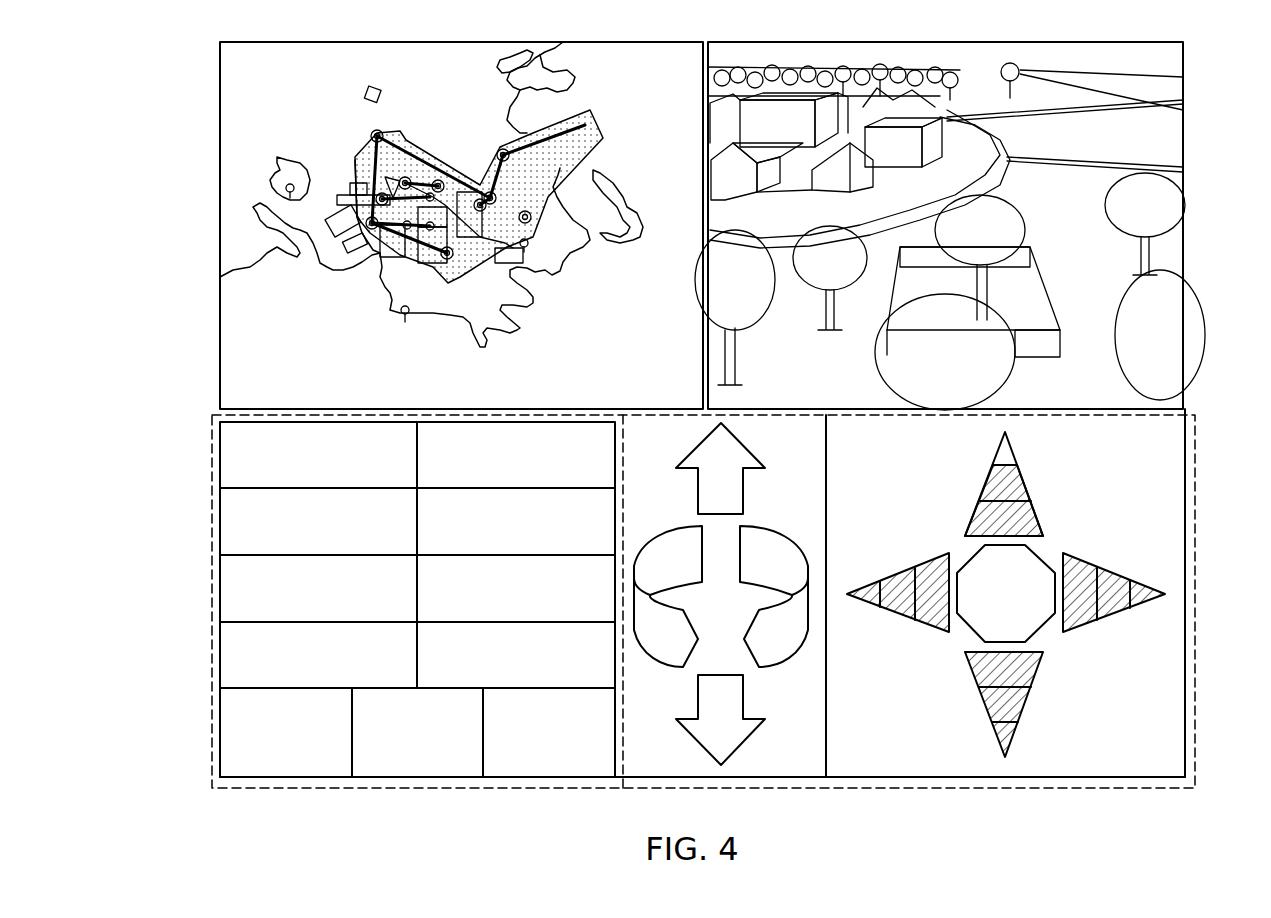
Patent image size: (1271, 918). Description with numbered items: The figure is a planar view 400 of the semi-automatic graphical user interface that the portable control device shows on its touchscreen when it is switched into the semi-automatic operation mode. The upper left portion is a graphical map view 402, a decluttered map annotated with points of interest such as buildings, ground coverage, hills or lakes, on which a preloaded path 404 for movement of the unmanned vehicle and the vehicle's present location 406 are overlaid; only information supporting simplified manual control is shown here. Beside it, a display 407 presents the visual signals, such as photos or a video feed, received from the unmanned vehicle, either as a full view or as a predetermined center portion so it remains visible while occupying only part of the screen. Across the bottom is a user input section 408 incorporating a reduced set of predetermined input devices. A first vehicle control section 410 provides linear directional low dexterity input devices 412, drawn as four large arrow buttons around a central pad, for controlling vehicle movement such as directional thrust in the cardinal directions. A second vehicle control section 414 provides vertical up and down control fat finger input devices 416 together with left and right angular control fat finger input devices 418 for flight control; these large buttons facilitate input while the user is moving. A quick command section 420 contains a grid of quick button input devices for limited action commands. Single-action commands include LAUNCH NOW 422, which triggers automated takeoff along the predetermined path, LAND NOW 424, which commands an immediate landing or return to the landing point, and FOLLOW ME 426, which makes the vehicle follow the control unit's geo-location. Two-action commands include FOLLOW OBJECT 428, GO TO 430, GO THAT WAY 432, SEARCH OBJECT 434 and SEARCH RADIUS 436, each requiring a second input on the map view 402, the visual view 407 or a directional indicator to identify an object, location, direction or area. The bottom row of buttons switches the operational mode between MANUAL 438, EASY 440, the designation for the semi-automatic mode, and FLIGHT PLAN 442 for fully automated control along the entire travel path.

The view 400 is at (145, 88).
The graphical map view 402 is at (468, 42).
The preloaded path 404 is at (415, 148).
The present location 406 is at (456, 276).
The display of visual signals 407 is at (966, 42).
The user input section 408 is at (1200, 522).
The first vehicle control section 410 is at (1166, 453).
The linear directional low dexterity input devices 412 is at (985, 483).
The second vehicle control section 414 is at (816, 453).
The vertical up and down control fat finger input devices 416 is at (692, 450).
The left and right angular control fat finger input devices 418 is at (673, 526).
The quick command section 420 is at (210, 522).
The LAUNCH NOW quick button input device 422 is at (340, 481).
The LAND NOW quick button input device 424 is at (494, 481).
The FOLLOW ME quick button input device 426 is at (340, 548).
The FOLLOW OBJECT quick button input device 428 is at (494, 548).
The GO TO quick button input device 430 is at (340, 615).
The GO THAT WAY quick button input device 432 is at (494, 615).
The SEARCH OBJECT quick button input device 434 is at (340, 682).
The SEARCH RADIUS quick button input device 436 is at (494, 682).
The MANUAL quick button input device 438 is at (263, 769).
The EASY quick button input device 440 is at (395, 769).
The FLIGHT PLAN quick button input device 442 is at (526, 769).